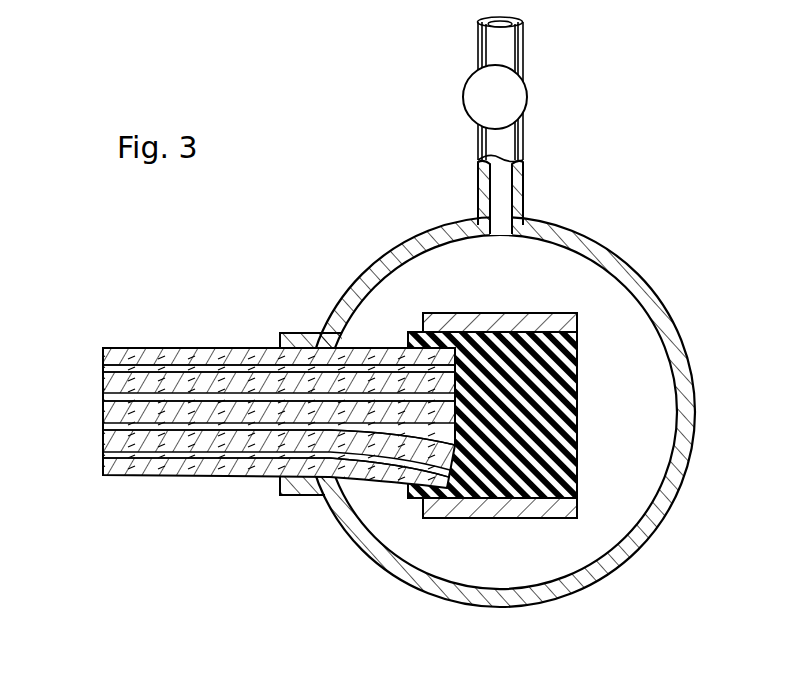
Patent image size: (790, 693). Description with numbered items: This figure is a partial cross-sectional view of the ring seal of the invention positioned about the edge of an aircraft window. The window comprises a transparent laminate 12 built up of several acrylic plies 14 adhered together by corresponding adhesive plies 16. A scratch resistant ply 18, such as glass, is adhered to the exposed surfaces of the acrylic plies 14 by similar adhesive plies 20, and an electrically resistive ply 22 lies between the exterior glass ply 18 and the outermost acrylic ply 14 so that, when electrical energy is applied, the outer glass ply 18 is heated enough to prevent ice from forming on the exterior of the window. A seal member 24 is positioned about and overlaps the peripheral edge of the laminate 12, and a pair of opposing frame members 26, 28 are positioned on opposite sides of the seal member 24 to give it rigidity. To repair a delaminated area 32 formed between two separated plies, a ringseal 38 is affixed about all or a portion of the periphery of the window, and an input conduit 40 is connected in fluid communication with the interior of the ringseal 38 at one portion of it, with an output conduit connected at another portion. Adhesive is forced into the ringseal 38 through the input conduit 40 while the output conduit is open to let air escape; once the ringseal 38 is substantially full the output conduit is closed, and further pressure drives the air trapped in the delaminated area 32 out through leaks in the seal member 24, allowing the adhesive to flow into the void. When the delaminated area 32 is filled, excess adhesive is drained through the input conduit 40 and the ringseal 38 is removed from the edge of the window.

The transparent laminate 12 is at (242, 400).
The acrylic plies 14 is at (103, 452).
The adhesive plies 16 is at (103, 435).
The scratch resistant ply 18 is at (229, 470).
The adhesive plies 20 is at (103, 465).
The electrically resistive ply 22 is at (103, 368).
The seal member 24 is at (563, 386).
The frame member 26 is at (470, 313).
The frame member 28 is at (490, 520).
The delaminated area 32 is at (408, 487).
The ringseal 38 is at (674, 347).
The input conduit 40 is at (502, 138).